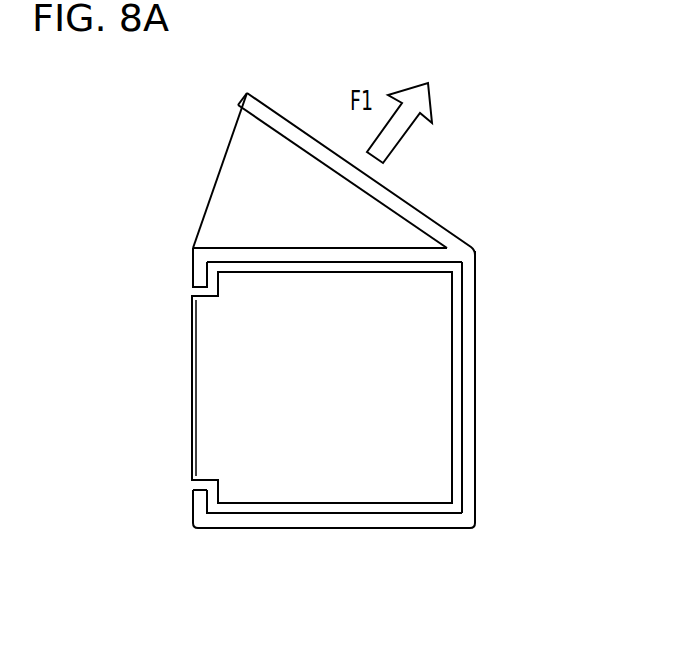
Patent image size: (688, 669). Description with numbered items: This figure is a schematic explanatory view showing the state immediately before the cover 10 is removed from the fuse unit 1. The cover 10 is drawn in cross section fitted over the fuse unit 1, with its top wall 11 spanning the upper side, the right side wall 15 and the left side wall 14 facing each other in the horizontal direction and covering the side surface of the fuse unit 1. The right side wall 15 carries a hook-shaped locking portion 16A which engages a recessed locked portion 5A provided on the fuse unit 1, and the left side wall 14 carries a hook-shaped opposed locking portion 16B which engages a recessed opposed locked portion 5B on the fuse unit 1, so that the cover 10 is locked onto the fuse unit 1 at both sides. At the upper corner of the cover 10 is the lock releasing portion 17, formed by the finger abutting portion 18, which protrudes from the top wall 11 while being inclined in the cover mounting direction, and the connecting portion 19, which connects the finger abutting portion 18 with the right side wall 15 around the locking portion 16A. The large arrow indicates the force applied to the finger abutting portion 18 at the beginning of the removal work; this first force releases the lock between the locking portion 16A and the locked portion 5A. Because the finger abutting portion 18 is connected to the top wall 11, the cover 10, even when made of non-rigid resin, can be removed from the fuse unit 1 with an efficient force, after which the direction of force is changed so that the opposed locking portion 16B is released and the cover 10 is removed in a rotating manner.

The fuse unit 1 is at (410, 508).
The recessed locked portion 5A is at (198, 296).
The recessed opposed locked portion 5B is at (197, 485).
The cover 10 is at (336, 381).
The top wall 11 is at (476, 340).
The left side wall 14 is at (313, 529).
The right side wall 15 is at (352, 247).
The locking portion 16A is at (192, 273).
The opposed locking portion 16B is at (193, 512).
The lock releasing portion 17 is at (301, 152).
The finger abutting portion 18 is at (296, 123).
The connecting portion 19 is at (222, 189).